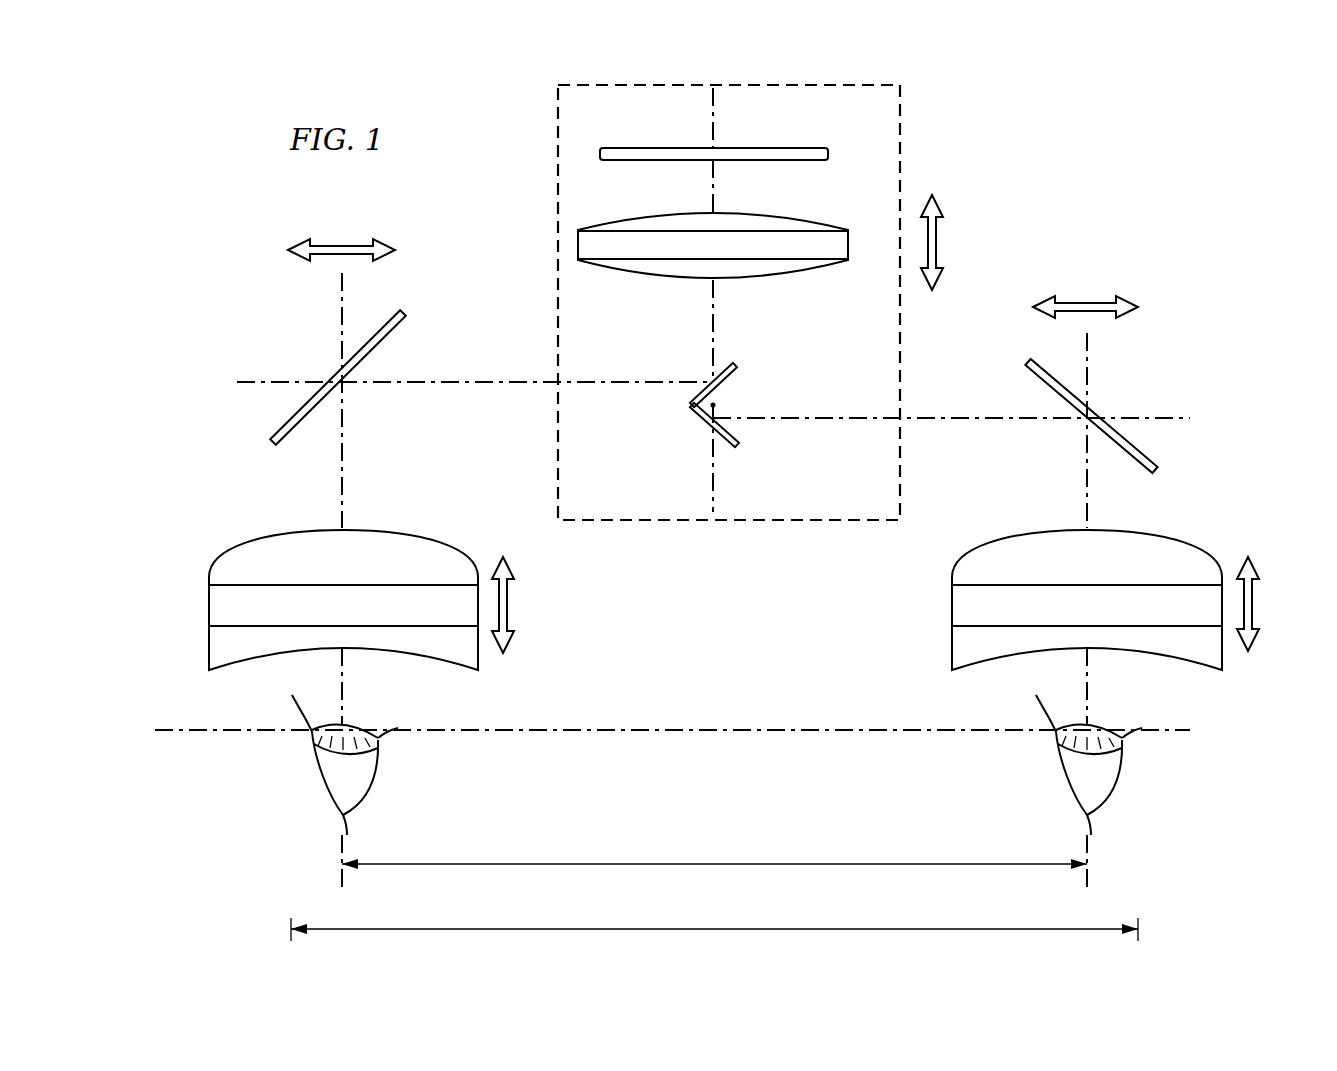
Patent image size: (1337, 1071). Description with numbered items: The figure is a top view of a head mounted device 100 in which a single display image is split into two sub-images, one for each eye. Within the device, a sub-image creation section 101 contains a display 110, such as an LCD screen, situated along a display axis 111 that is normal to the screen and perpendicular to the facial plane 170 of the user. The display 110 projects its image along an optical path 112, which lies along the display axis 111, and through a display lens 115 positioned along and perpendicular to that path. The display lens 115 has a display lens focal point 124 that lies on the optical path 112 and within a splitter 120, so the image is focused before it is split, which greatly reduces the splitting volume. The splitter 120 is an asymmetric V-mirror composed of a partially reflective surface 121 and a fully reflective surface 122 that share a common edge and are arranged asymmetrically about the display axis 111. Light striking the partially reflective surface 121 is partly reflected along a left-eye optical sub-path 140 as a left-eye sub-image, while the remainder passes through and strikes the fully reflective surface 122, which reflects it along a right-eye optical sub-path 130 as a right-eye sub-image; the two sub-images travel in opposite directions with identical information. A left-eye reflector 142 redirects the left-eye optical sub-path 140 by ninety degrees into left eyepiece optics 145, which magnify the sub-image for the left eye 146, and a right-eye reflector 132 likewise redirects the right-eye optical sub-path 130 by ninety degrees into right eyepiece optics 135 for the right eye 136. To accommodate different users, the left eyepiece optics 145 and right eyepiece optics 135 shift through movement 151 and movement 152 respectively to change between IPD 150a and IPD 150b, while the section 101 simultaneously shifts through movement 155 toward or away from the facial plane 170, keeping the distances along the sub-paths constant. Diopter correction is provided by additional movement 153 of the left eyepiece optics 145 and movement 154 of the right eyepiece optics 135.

The head mounted device 100 is at (1200, 194).
The sub-image creation section 101 is at (901, 136).
The display 110 is at (751, 148).
The display axis 111 is at (712, 137).
The optical path 112 is at (712, 206).
The display lens 115 is at (820, 214).
The splitter 120 is at (754, 420).
The partially reflective surface 121 is at (736, 369).
The fully reflective surface 122 is at (738, 447).
The display lens focal point 124 is at (716, 405).
The right-eye optical sub-path 130 is at (848, 416).
The right-eye reflector 132 is at (1142, 440).
The right eyepiece optics 135 is at (1160, 531).
The right eye 136 is at (1120, 786).
The left-eye optical sub-path 140 is at (500, 380).
The left-eye reflector 142 is at (290, 410).
The left eyepiece optics 145 is at (316, 530).
The left eye 146 is at (322, 778).
The IPD 150a is at (722, 862).
The IPD 150b is at (722, 927).
The movement 151 is at (341, 243).
The movement 152 is at (1091, 300).
The movement 153 is at (510, 605).
The movement 154 is at (1255, 604).
The movement 155 is at (938, 237).
The facial plane 170 is at (718, 728).